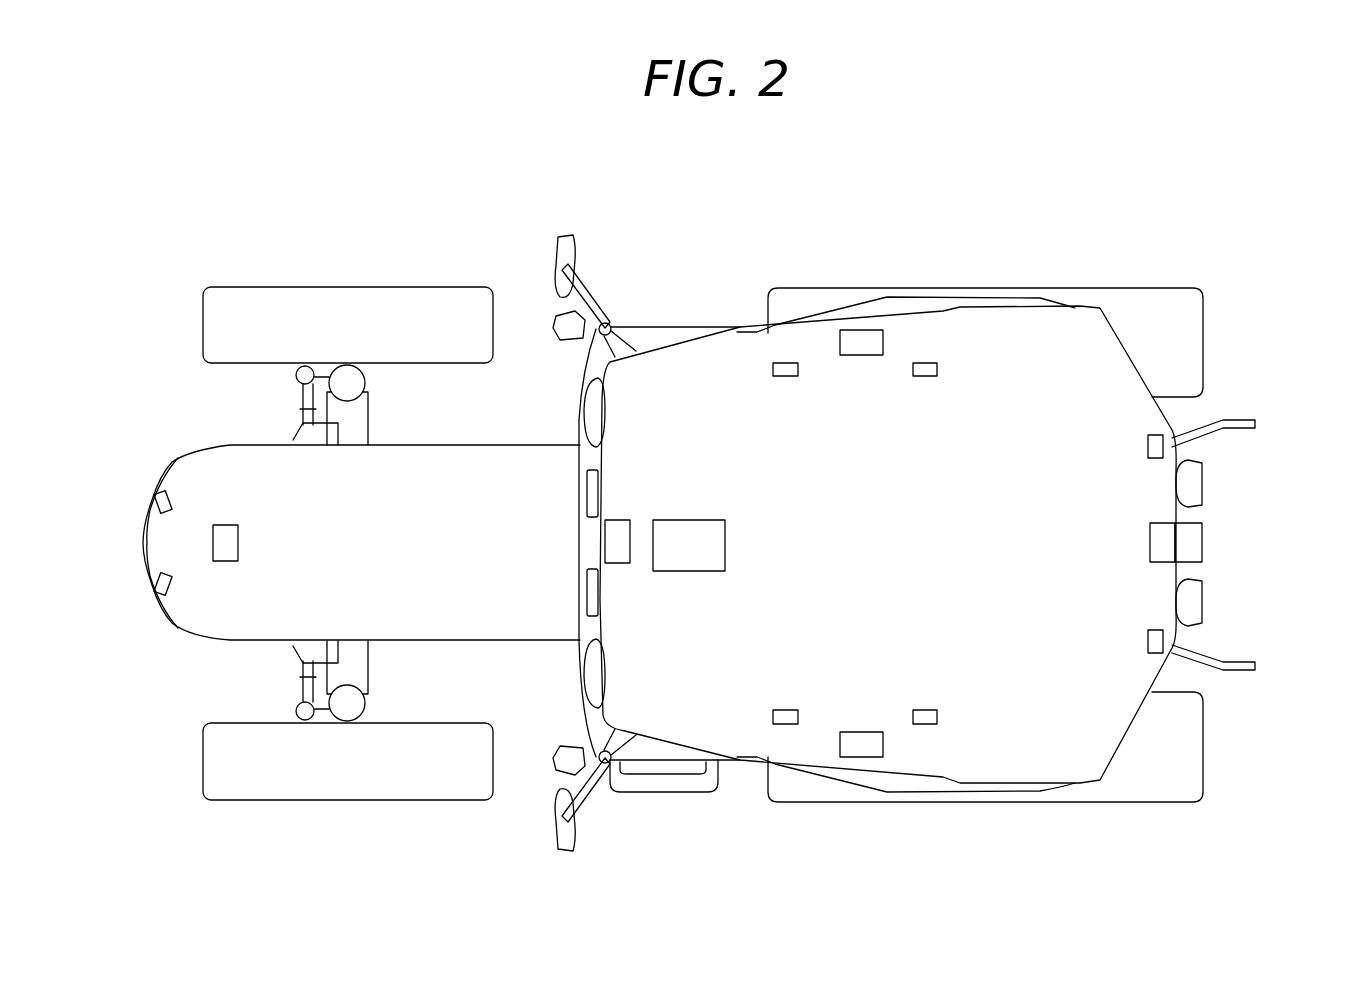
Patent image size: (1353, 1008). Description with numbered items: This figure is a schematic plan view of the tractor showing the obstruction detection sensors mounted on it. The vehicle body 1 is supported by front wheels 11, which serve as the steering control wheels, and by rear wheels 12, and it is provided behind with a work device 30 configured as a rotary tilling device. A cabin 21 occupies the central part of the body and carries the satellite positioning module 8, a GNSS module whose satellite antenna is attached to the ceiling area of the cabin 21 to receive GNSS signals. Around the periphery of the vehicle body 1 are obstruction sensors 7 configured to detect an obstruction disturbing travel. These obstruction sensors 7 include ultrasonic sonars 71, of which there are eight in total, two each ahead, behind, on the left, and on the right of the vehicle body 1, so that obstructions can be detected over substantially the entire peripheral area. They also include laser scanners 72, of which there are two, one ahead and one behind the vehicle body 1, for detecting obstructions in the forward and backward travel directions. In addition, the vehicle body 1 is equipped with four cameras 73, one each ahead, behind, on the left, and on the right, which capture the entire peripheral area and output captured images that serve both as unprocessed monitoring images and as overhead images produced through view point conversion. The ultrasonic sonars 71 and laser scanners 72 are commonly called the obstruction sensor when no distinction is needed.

The vehicle body 1 is at (256, 236).
The front wheels 11 is at (363, 298).
The rear wheels 12 is at (1133, 297).
The cabin 21 is at (670, 363).
The work device 30 is at (1246, 396).
The obstruction sensors 7 is at (728, 544).
The ultrasonic sonar 71 is at (172, 492).
The laser scanner 72 is at (233, 540).
The camera 73 is at (618, 527).
The satellite positioning module 8 is at (690, 525).